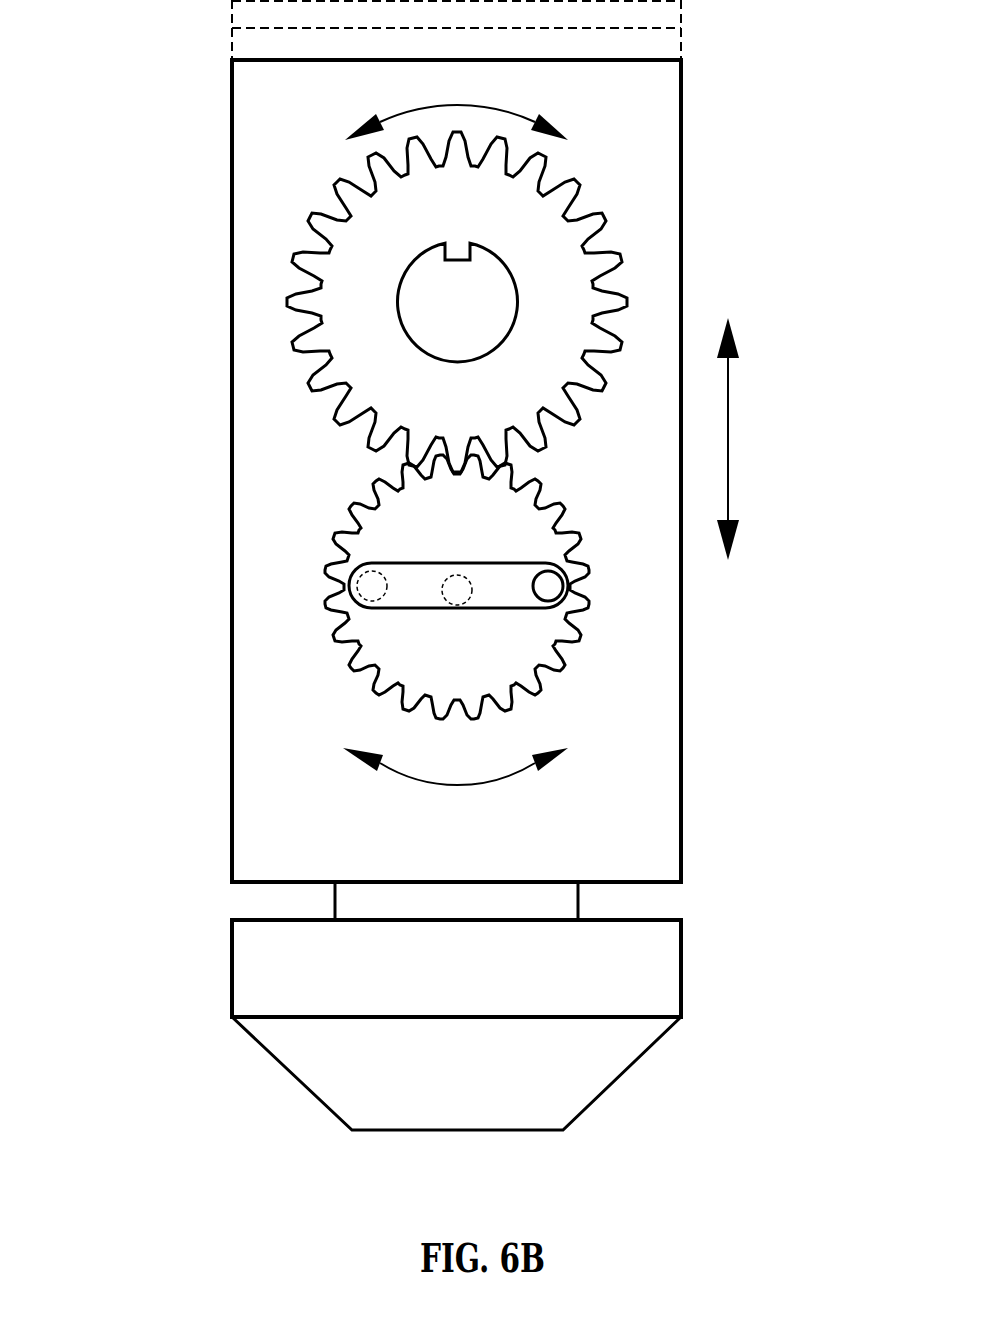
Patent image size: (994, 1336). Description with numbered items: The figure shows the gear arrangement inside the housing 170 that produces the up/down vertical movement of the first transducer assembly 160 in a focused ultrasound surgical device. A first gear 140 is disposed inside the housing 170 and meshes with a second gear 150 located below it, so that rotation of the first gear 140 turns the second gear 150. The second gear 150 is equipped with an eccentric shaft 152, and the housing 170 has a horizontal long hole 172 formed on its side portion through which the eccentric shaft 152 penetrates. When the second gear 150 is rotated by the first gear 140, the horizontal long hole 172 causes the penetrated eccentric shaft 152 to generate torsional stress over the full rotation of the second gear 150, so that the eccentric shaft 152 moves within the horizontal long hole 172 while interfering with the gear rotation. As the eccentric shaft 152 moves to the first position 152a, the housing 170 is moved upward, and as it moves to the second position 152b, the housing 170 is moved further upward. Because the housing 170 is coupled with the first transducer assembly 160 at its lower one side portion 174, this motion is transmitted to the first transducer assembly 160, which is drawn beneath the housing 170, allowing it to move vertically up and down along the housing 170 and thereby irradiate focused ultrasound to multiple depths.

The first gear 140 is at (650, 207).
The second gear 150 is at (312, 488).
The eccentric shaft 152 is at (552, 588).
The first position 152a is at (445, 596).
The second position 152b is at (348, 582).
The first transducer assembly 160 is at (723, 970).
The housing 170 is at (232, 168).
The horizontal long hole 172 is at (522, 610).
The one side portion 174 is at (290, 880).